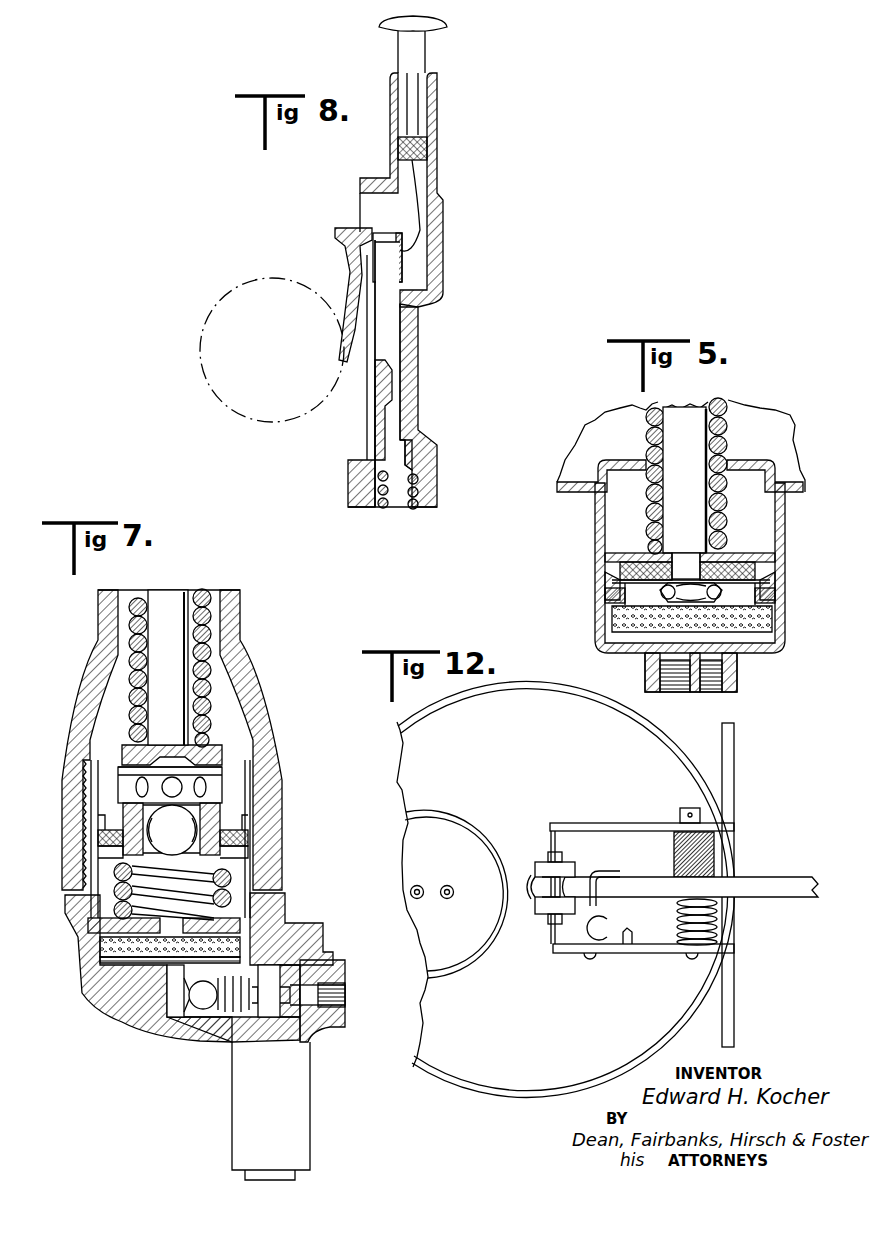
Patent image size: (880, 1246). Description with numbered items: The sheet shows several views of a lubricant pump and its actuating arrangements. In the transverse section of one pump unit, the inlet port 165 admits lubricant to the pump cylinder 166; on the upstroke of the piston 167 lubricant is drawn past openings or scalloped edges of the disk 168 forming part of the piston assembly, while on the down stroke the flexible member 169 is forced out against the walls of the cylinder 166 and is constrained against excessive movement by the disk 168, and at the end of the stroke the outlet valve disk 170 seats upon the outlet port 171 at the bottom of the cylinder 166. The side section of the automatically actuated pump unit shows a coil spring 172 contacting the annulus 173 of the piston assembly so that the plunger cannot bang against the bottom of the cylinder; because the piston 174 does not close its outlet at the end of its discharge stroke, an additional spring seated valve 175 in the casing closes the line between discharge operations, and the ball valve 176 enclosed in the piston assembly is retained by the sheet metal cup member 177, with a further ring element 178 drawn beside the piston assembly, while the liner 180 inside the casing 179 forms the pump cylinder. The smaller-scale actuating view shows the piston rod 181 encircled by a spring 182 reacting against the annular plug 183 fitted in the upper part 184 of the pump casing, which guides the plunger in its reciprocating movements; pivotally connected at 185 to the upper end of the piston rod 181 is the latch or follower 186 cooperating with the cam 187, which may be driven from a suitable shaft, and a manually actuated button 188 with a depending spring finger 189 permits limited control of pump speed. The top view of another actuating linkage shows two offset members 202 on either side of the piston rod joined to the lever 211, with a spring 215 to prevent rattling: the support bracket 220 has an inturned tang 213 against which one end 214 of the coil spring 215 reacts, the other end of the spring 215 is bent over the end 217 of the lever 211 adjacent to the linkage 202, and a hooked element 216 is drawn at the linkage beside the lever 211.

In FIG. 5, the inlet port 165 is at (733, 466).
In FIG. 5, the pump cylinder 166 is at (597, 541).
In FIG. 5, the piston 167 is at (615, 562).
In FIG. 5, the disk 168 is at (760, 562).
In FIG. 5, the flexible member 169 is at (766, 585).
In FIG. 5, the outlet valve disk 170 is at (612, 585).
In FIG. 5, the outlet port 171 is at (742, 620).
In FIG. 7, the coil spring 172 is at (205, 886).
In FIG. 7, the annulus 173 is at (225, 843).
In FIG. 7, the piston 174 is at (182, 830).
In FIG. 7, the spring seated valve 175 is at (203, 1002).
In FIG. 7, the ball valve 176 is at (245, 800).
In FIG. 7, the sheet metal cup member 177 is at (112, 896).
In FIG. 7, the packing ring 178 is at (120, 826).
In FIG. 7, the casing 179 is at (270, 756).
In FIG. 7, the liner 180 is at (92, 869).
In FIG. 8, the piston rod 181 is at (388, 340).
In FIG. 7, the piston rod 181 is at (176, 600).
In FIG. 8, the spring 182 is at (372, 485).
In FIG. 7, the spring 182 is at (208, 617).
In FIG. 8, the annular plug 183 is at (408, 452).
In FIG. 8, the upper part of the pump casing 184 is at (420, 390).
In FIG. 8, the pivot connection 185 is at (395, 249).
In FIG. 8, the latch or follower 186 is at (350, 263).
In FIG. 8, the cam 187 is at (236, 404).
In FIG. 8, the manually actuated button 188 is at (447, 27).
In FIG. 8, the spring finger 189 is at (418, 190).
In FIG. 12, the offset members 202 is at (574, 877).
In FIG. 12, the lever 211 is at (783, 877).
In FIG. 12, the inturned tang 213 is at (629, 950).
In FIG. 12, the end of coil spring 214 is at (601, 950).
In FIG. 12, the spring 215 is at (716, 925).
In FIG. 12, the hook member 216 is at (622, 873).
In FIG. 12, the end of the lever 217 is at (528, 880).
In FIG. 12, the support bracket 220 is at (555, 955).